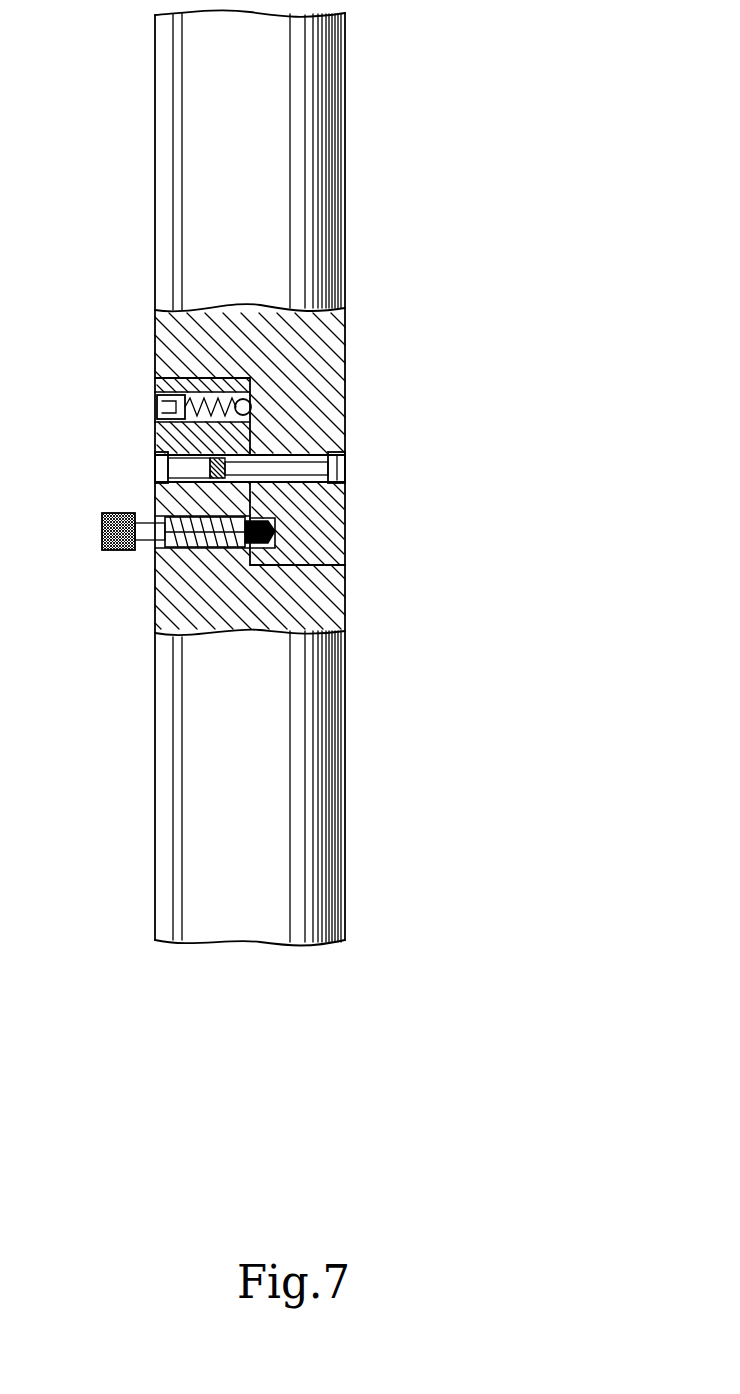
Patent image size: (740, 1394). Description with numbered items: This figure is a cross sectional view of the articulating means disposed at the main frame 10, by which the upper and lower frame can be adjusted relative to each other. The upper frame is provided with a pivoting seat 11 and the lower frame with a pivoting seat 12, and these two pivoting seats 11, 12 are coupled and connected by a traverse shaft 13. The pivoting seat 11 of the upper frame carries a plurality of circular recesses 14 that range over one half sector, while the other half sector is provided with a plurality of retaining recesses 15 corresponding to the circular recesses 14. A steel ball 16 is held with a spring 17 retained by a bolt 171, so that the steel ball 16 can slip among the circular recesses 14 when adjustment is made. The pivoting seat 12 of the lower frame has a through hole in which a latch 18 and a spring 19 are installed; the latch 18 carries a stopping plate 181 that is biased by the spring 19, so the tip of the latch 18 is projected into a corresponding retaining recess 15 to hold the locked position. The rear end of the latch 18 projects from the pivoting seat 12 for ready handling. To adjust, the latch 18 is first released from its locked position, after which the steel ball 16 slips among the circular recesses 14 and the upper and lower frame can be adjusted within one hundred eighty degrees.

The main frame 10 is at (296, 176).
The pivoting seat 11 is at (320, 437).
The pivoting seat 12 is at (160, 502).
The traverse shaft 13 is at (160, 462).
The circular recess 14 is at (258, 407).
The retaining recess 15 is at (275, 525).
The steel ball 16 is at (253, 398).
The spring 17 is at (160, 363).
The bolt 171 is at (160, 410).
The latch 18 is at (100, 538).
The stopping plate 181 is at (273, 553).
The spring 19 is at (157, 600).